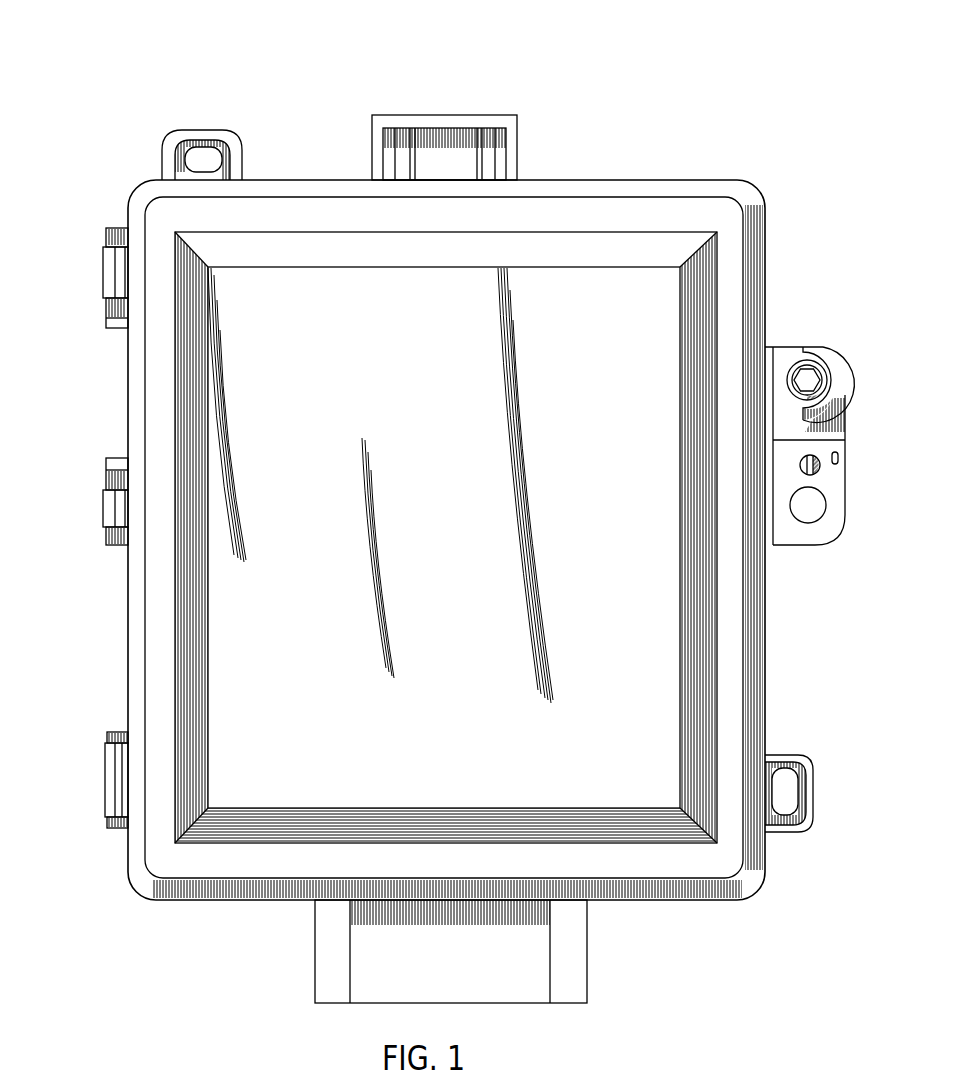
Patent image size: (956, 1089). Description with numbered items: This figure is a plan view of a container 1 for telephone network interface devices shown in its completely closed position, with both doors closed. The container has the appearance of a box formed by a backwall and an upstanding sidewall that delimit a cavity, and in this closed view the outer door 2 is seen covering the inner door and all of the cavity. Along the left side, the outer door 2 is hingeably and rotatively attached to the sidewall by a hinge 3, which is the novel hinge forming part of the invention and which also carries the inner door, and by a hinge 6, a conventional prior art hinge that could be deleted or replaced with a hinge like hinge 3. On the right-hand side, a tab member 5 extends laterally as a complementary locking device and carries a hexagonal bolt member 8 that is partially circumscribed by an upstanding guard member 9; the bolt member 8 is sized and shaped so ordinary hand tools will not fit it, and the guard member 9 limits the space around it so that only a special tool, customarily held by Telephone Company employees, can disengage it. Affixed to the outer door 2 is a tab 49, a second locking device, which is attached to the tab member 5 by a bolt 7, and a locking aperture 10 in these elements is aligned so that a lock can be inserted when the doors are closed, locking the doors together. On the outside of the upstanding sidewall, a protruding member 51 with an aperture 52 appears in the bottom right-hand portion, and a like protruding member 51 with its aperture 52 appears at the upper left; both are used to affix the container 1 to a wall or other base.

The container for telephone network interface devices 1 is at (375, 80).
The outer door 2 is at (452, 505).
The hinge 3 is at (94, 282).
The tab member 5 is at (783, 347).
The hinge 6 is at (94, 782).
The bolt 7 is at (800, 467).
The hexagonal bolt member 8 is at (812, 380).
The upstanding guard member 9 is at (822, 352).
The locking aperture 10 is at (808, 518).
The tab 49 is at (840, 490).
The protruding member 51 is at (201, 130).
The aperture 52 is at (213, 162).